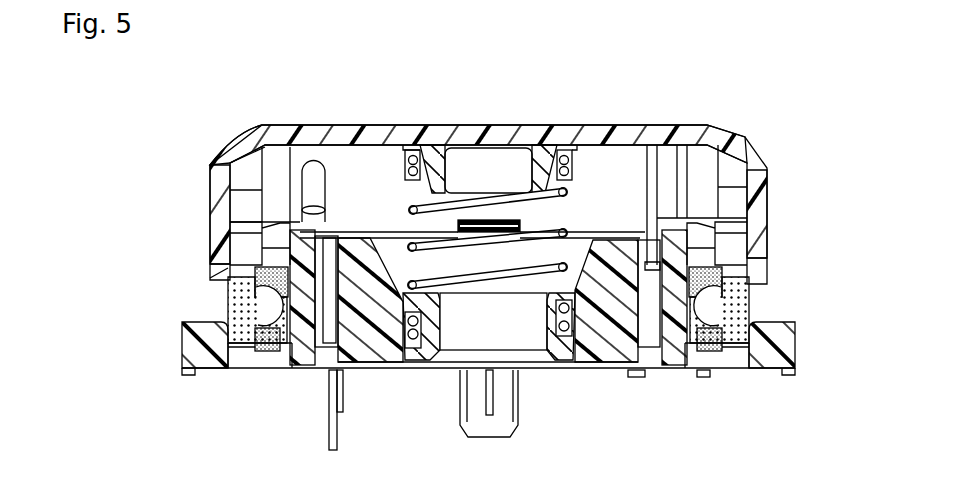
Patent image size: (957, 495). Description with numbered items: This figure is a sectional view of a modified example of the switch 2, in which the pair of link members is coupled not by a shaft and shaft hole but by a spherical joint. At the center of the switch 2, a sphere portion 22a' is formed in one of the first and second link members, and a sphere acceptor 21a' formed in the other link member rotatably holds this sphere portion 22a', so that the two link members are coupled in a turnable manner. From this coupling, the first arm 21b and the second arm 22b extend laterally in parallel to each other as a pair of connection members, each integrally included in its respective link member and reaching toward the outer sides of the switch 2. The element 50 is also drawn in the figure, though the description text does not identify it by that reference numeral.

The switch 2 is at (790, 111).
The housing cover 50 is at (586, 134).
The second arm 22b is at (224, 292).
The sphere portion 22a' is at (487, 306).
The first arm 21b is at (262, 377).
The sphere acceptor 21a' is at (488, 385).